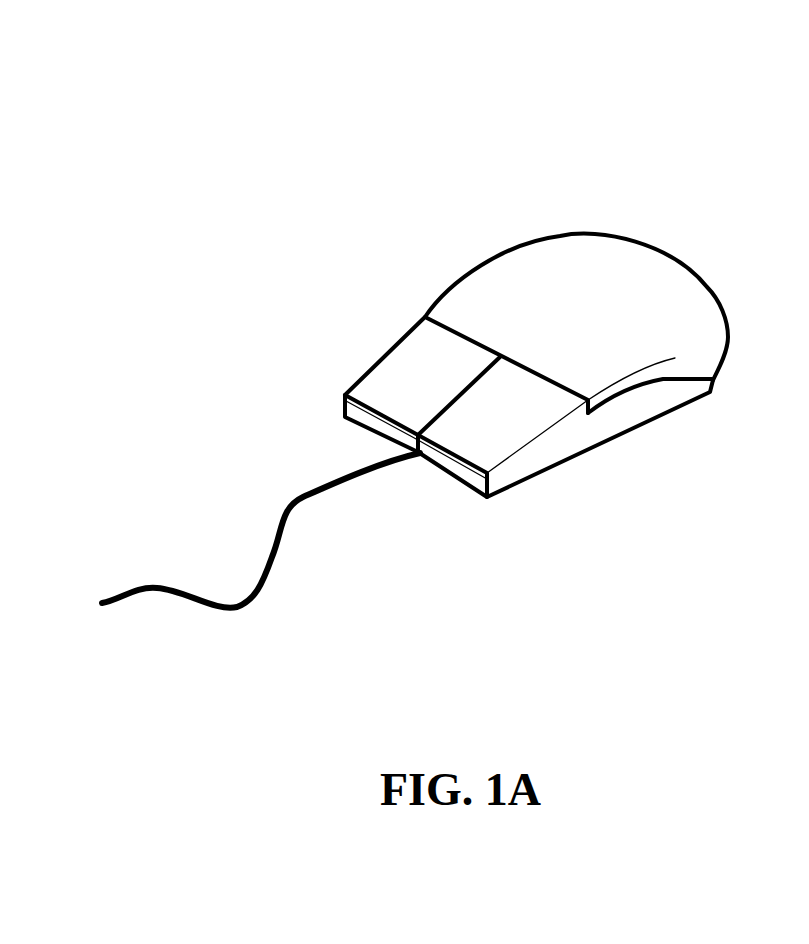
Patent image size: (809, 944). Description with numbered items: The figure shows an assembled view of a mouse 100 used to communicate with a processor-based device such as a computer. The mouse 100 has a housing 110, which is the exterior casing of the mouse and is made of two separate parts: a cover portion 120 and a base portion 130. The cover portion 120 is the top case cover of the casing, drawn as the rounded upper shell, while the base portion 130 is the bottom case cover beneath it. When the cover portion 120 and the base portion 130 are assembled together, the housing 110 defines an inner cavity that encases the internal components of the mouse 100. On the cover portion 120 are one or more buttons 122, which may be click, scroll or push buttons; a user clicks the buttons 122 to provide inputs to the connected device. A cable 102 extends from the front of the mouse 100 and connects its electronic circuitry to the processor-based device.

The mouse 100 is at (182, 92).
The cable 102 is at (292, 510).
The housing 110 is at (437, 300).
The cover portion 120 is at (568, 280).
The buttons 122 is at (405, 373).
The base portion 130 is at (612, 418).